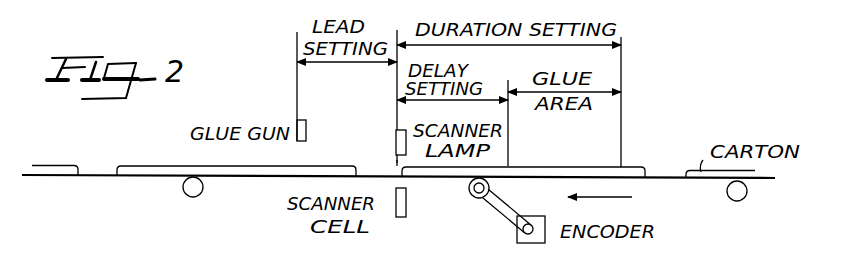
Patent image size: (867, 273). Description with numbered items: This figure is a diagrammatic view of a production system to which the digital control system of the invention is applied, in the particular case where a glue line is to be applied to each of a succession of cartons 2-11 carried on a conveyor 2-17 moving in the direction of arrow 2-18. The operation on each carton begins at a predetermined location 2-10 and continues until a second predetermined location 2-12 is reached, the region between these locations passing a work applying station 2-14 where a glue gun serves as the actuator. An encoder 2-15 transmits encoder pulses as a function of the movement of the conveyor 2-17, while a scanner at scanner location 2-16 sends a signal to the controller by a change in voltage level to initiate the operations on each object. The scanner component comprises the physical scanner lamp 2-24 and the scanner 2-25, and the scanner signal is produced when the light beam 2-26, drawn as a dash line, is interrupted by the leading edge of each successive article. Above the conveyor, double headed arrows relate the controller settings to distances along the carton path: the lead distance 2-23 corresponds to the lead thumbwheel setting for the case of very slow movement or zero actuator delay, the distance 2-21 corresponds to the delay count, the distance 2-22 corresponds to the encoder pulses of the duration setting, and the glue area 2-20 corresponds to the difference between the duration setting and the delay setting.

The predetermined location 2-10 is at (510, 168).
The carton 2-11 is at (136, 166).
The second predetermined location 2-12 is at (623, 167).
The work applying station 2-14 is at (308, 133).
The encoder 2-15 is at (527, 245).
The scanner location 2-16 is at (397, 222).
The conveyor 2-17 is at (97, 177).
The arrow indicating direction of conveyor movement 2-18 is at (622, 197).
The glue area 2-20 is at (602, 96).
The delay setting distance 2-21 is at (420, 104).
The duration setting distance 2-22 is at (501, 47).
The lead distance 2-23 is at (323, 66).
The scanner lamp 2-24 is at (396, 142).
The scanner 2-25 is at (407, 206).
The light beam 2-26 is at (397, 165).